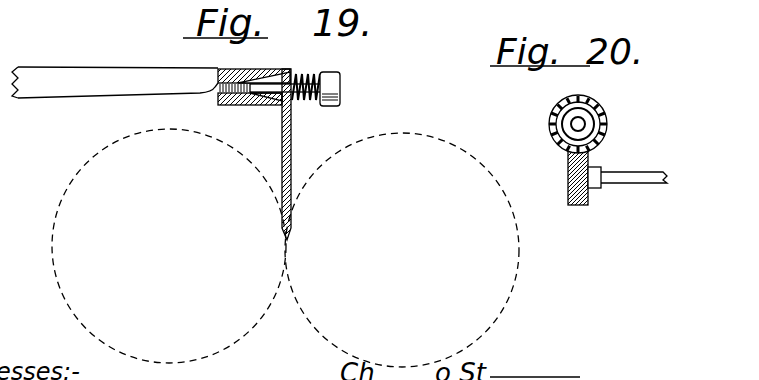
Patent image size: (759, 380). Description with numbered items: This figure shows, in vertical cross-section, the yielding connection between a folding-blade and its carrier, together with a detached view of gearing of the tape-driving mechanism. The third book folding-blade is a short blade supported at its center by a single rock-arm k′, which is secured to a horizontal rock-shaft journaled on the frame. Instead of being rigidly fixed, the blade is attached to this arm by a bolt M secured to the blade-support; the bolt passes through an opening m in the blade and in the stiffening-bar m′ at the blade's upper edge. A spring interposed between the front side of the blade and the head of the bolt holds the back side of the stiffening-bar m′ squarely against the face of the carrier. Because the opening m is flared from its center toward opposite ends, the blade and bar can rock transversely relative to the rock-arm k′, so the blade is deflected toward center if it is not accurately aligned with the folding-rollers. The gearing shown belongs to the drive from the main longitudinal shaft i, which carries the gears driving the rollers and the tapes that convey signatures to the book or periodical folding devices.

In FIG. 19, the rock-arm k′ is at (48, 30).
In FIG. 19, the bolt M is at (238, 105).
In FIG. 19, the stiffening-bar m′ is at (263, 72).
In FIG. 19, the opening m is at (270, 105).
In FIG. 20, the main longitudinal shaft i is at (578, 123).